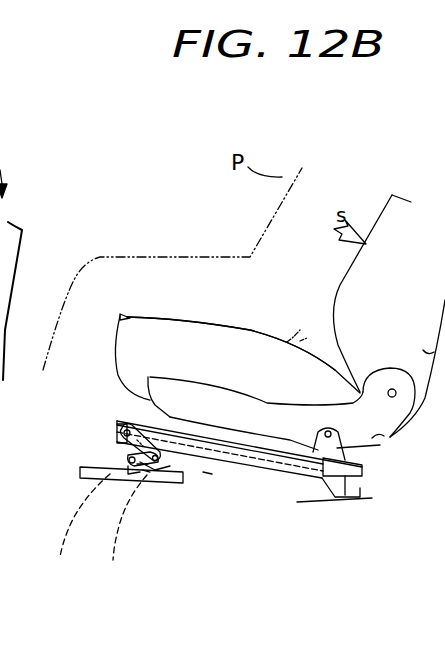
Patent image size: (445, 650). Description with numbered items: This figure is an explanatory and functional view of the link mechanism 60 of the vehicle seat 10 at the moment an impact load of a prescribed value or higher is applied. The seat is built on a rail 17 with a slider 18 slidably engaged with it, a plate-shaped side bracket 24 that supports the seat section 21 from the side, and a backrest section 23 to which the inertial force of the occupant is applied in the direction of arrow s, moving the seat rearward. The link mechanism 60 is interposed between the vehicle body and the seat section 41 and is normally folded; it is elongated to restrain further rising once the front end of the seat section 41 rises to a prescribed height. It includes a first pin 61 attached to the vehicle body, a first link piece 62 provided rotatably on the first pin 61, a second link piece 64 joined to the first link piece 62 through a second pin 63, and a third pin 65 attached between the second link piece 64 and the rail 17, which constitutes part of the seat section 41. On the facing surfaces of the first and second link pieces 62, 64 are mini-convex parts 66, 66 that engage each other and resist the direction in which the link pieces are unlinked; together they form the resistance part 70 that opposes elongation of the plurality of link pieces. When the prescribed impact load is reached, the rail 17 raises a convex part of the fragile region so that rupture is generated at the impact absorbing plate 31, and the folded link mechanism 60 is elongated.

The vehicle seat 10 is at (440, 197).
The backrest section 23 is at (12, 263).
The seat section 41 is at (210, 345).
The seat section 21 is at (247, 343).
The side bracket 24 is at (380, 440).
The rail 17 is at (263, 476).
The slider 18 is at (343, 500).
The impact absorbing plate 31 is at (207, 474).
The link mechanism 60 is at (109, 518).
The first pin 61 is at (156, 494).
The first link piece 62 is at (140, 478).
The second pin 63 is at (157, 472).
The second link piece 64 is at (125, 457).
The third pin 65 is at (120, 427).
The mini-convex part 66 is at (137, 584).
The resistance part 70 is at (93, 550).